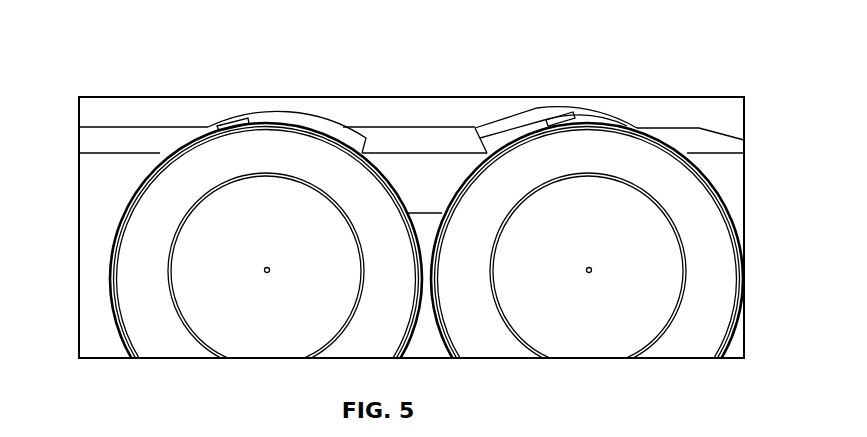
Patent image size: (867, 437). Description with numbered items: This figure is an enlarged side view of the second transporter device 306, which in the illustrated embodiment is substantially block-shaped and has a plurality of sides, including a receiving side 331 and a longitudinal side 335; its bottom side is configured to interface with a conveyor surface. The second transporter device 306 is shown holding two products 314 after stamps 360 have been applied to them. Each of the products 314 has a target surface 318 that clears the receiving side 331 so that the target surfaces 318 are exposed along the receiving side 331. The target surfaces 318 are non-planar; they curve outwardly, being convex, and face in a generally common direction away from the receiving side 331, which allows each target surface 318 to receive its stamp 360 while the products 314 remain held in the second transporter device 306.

The second transporter device 306 is at (104, 50).
The receiving side 331 is at (131, 85).
The longitudinal side 335 is at (98, 178).
The products 314 is at (375, 165).
The target surfaces 318 is at (233, 133).
The stamps 360 is at (244, 117).